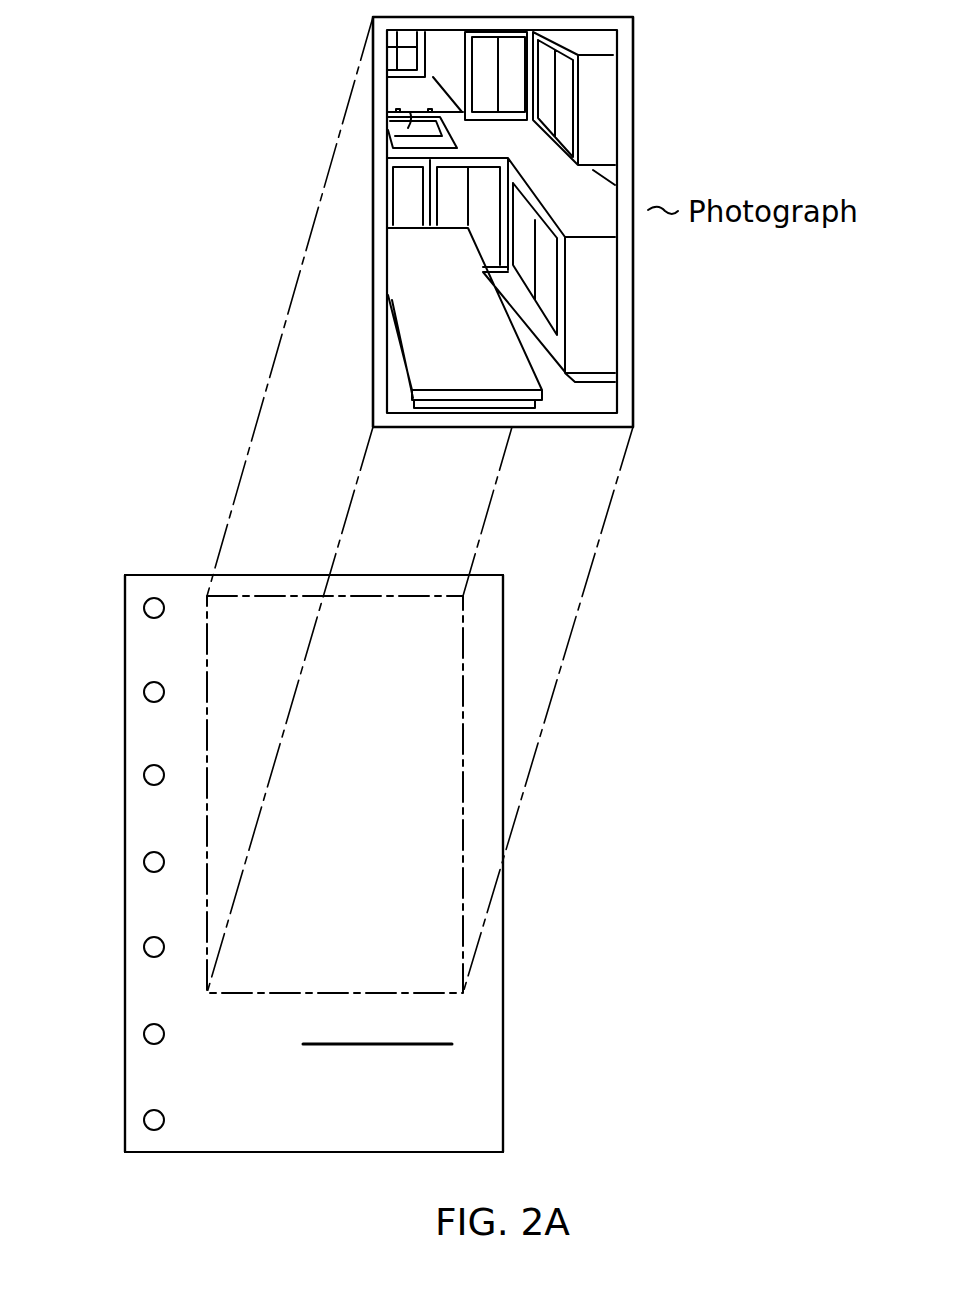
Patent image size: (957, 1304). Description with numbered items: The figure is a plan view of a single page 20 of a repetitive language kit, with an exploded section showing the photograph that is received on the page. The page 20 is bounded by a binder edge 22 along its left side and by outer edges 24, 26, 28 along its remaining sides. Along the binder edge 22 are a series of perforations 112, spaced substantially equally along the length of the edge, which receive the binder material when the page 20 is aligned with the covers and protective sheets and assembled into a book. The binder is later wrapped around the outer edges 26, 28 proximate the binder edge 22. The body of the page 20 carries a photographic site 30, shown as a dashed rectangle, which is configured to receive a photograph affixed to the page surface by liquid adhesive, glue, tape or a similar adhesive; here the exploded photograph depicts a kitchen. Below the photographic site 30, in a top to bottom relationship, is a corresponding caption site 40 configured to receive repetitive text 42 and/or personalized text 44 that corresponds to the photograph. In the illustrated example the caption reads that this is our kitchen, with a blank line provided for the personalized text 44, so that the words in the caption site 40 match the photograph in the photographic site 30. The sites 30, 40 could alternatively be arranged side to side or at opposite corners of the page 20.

The page 20 is at (513, 918).
The binder edge 22 is at (123, 750).
The outer edge 24 is at (508, 680).
The outer edge 26 is at (373, 572).
The outer edge 28 is at (270, 1155).
The photographic site 30 is at (441, 808).
The caption site 40 is at (195, 1060).
The repetitive text 42 is at (390, 1073).
The personalized text 44 is at (455, 1027).
The perforation 112 is at (143, 609).